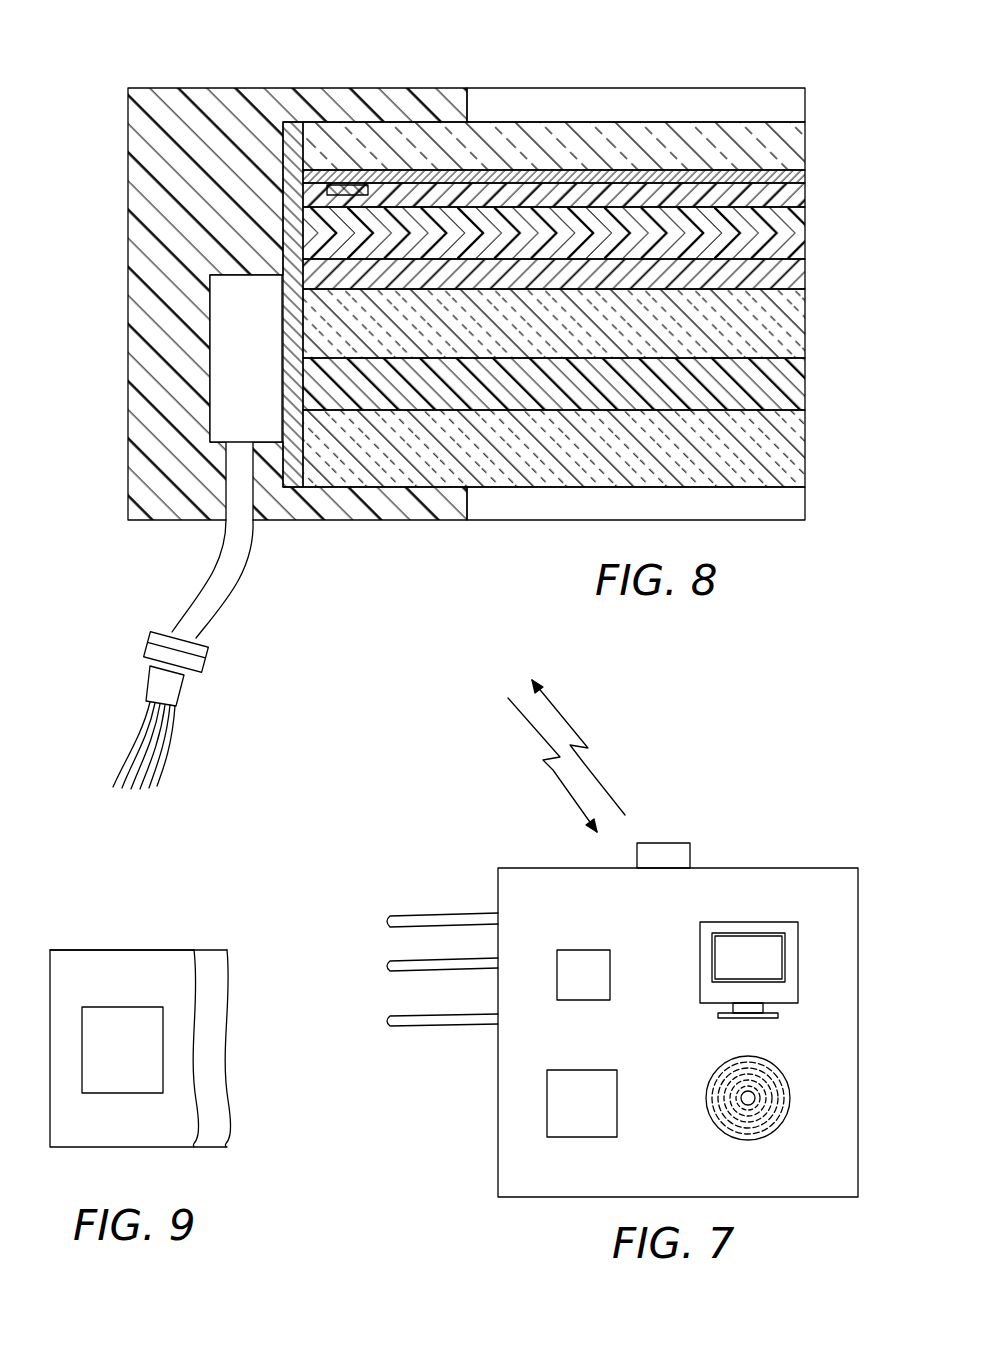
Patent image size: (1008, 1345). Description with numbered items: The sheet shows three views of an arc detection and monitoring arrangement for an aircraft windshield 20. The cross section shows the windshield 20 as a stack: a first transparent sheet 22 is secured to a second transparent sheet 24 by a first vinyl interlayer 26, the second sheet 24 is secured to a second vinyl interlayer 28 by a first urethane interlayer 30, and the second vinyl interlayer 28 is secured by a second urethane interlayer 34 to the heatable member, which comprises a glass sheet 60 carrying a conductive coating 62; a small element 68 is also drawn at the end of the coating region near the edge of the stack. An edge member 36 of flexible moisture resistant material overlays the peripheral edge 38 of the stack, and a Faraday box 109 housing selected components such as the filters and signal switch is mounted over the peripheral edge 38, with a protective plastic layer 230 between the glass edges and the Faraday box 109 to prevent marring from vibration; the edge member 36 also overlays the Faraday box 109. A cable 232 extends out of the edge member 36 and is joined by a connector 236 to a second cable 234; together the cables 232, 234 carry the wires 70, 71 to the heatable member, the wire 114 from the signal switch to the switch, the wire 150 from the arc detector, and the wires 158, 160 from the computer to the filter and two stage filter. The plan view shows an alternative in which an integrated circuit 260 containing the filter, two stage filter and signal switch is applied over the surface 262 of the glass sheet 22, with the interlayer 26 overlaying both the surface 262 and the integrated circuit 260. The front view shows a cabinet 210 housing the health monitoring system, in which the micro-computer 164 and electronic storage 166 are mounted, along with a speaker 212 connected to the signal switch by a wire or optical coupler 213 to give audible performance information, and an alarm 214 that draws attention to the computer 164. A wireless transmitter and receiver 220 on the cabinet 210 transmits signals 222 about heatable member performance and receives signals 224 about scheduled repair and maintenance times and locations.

In FIG. 8, the windshield 20 is at (752, 70).
In FIG. 8, the edge member 36 is at (423, 88).
In FIG. 8, the peripheral edge 38 is at (305, 430).
In FIG. 8, the protective plastic layer 230 is at (285, 173).
In FIG. 8, the Faraday box 109 is at (200, 312).
In FIG. 8, the glass sheet 60 is at (806, 141).
In FIG. 8, the conductive coating 62 is at (806, 179).
In FIG. 8, the second urethane interlayer 34 is at (806, 192).
In FIG. 8, the contact 68 is at (335, 186).
In FIG. 8, the second vinyl interlayer 28 is at (806, 229).
In FIG. 8, the first urethane interlayer 30 is at (806, 273).
In FIG. 8, the second transparent sheet 24 is at (806, 316).
In FIG. 8, the first vinyl interlayer 26 is at (806, 386).
In FIG. 9, the first vinyl interlayer 26 is at (208, 1028).
In FIG. 8, the first transparent sheet 22 is at (806, 442).
In FIG. 9, the first transparent sheet 22 is at (157, 965).
In FIG. 8, the cable 232 is at (232, 600).
In FIG. 8, the connector 236 is at (148, 636).
In FIG. 8, the cable 234 is at (160, 683).
In FIG. 8, the wire 150 is at (118, 765).
In FIG. 8, the wire 70 is at (112, 778).
In FIG. 8, the wire 71 is at (140, 789).
In FIG. 8, the wire 114 is at (152, 750).
In FIG. 8, the wire 158 is at (150, 781).
In FIG. 7, the wire 158 is at (425, 915).
In FIG. 8, the wire 160 is at (160, 773).
In FIG. 7, the wire 160 is at (423, 972).
In FIG. 9, the surface 262 is at (85, 1130).
In FIG. 9, the integrated circuit 260 is at (100, 1018).
In FIG. 7, the cabinet 210 is at (819, 838).
In FIG. 7, the wireless transmitter and receiver 220 is at (692, 858).
In FIG. 7, the signals 222 is at (600, 778).
In FIG. 7, the signals 224 is at (557, 787).
In FIG. 7, the wire or optical coupler 213 is at (432, 1027).
In FIG. 7, the electronic storage 166 is at (582, 950).
In FIG. 7, the micro-computer 164 is at (738, 922).
In FIG. 7, the alarm 214 is at (617, 1103).
In FIG. 7, the speaker 212 is at (747, 1142).